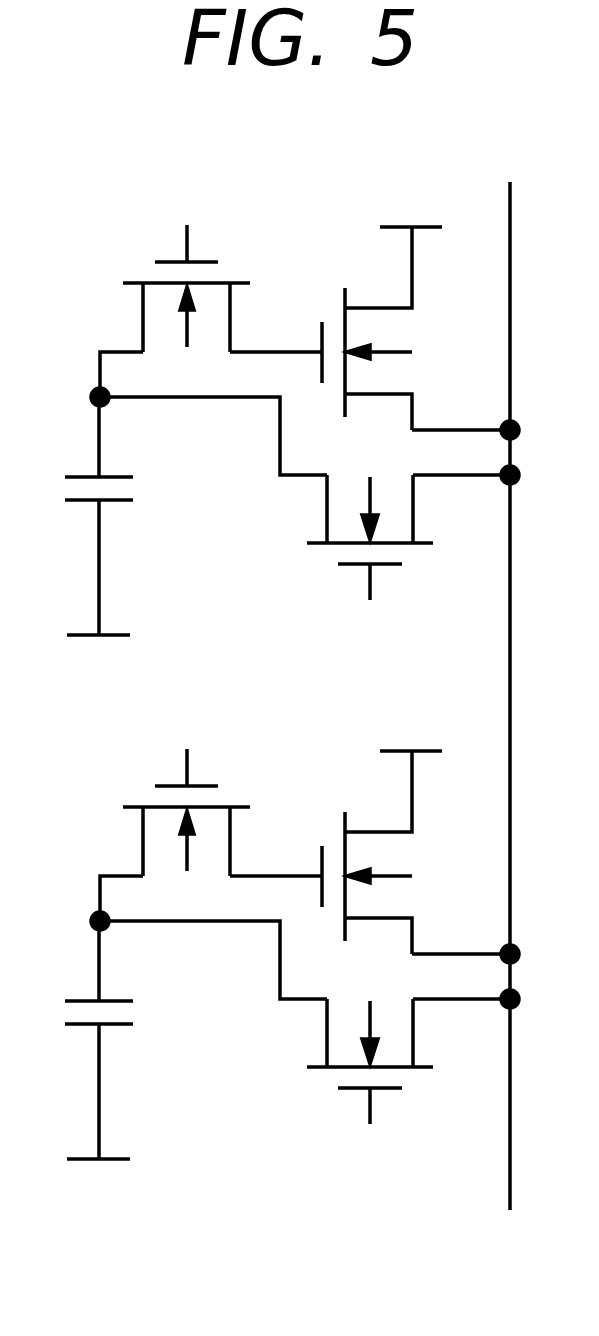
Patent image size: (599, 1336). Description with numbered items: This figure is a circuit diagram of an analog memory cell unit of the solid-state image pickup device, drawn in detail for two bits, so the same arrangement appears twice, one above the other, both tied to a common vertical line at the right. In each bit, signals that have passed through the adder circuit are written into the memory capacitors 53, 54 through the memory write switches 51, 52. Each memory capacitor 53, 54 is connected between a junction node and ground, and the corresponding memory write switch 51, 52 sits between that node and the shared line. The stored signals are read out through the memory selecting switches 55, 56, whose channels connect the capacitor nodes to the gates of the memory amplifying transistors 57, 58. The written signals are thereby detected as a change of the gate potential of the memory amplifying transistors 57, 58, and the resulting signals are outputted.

The memory write switch 51 is at (370, 1086).
The memory write switch 52 is at (353, 565).
The memory capacitor 53 is at (81, 1040).
The memory capacitor 54 is at (80, 502).
The memory selecting switch 55 is at (141, 805).
The memory selecting switch 56 is at (173, 261).
The memory amplifying transistor 57 is at (364, 838).
The memory amplifying transistor 58 is at (320, 337).